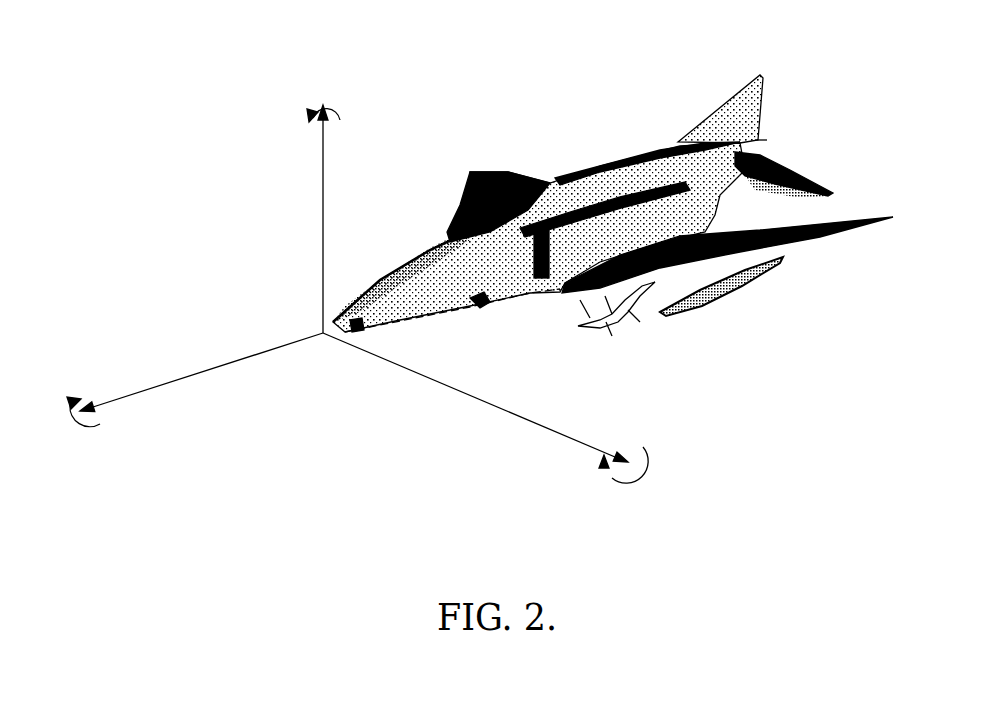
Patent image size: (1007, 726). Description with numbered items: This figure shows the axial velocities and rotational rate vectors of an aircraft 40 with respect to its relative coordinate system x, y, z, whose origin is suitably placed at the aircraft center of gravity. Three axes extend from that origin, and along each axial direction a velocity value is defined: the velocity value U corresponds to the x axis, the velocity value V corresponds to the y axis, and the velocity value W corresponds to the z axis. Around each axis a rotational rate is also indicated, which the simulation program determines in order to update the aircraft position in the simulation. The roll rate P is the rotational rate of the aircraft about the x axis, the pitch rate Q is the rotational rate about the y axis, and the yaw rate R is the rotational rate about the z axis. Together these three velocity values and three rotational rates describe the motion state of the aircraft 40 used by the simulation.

The aircraft 40 is at (582, 188).
The aircraft roll rate P is at (70, 400).
The aircraft pitch rate Q is at (612, 478).
The aircraft yaw rate R is at (338, 100).
The velocity value along x axis U is at (133, 392).
The velocity value along y axis V is at (528, 424).
The velocity value along z axis W is at (322, 155).